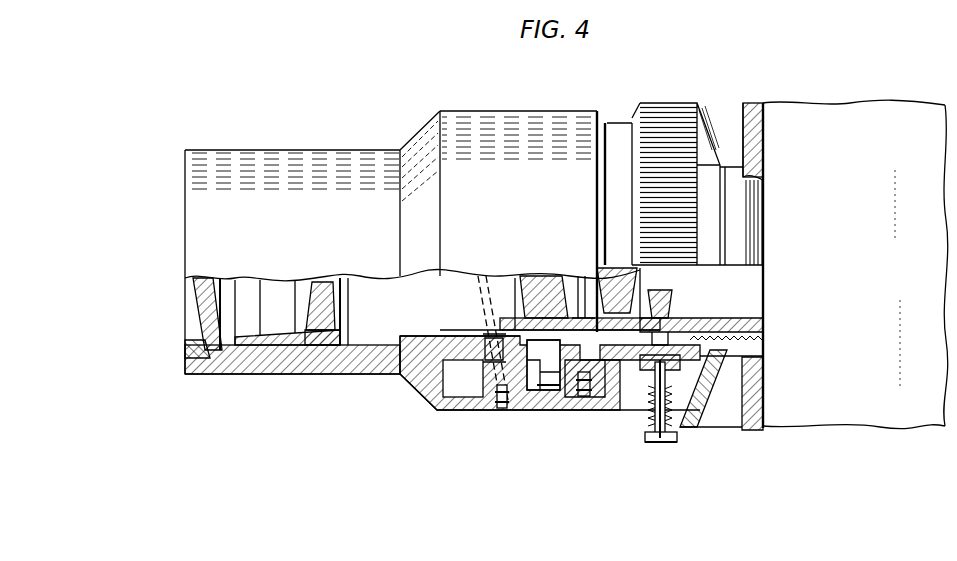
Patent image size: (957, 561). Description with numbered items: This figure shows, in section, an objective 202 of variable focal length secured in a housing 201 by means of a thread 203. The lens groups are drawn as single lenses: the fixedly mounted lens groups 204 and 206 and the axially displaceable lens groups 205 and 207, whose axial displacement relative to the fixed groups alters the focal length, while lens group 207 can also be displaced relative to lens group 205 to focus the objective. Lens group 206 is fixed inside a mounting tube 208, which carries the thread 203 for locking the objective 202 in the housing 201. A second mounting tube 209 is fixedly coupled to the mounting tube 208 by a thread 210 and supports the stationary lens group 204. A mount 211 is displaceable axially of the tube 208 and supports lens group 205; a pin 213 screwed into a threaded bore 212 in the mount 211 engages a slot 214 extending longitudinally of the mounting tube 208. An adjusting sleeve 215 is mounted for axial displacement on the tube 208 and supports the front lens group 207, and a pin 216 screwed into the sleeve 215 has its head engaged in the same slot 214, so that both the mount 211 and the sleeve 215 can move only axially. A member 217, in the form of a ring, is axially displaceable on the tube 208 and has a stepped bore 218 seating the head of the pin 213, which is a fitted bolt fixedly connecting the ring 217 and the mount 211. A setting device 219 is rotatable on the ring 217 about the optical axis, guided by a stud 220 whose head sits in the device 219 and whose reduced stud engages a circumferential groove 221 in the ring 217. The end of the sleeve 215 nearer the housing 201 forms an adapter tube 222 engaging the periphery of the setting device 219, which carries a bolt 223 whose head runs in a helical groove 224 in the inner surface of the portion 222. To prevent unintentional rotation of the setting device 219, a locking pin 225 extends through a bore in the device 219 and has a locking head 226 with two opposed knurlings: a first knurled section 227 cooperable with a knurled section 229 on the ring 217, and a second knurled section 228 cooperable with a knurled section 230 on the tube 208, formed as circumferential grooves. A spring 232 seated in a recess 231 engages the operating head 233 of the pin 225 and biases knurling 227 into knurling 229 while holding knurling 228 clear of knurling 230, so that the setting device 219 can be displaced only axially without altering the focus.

The housing 201 is at (858, 112).
The objective 202 is at (520, 122).
The thread 203 is at (758, 182).
The lens group 204 is at (612, 268).
The lens group 205 is at (580, 278).
The lens group 206 is at (325, 280).
The lens group 207 is at (193, 290).
The mounting tube 208 is at (320, 342).
The mounting tube 209 is at (716, 318).
The thread 210 is at (765, 312).
The mount 211 is at (650, 316).
The threaded bore 212 is at (525, 282).
The pin 213 is at (542, 388).
The slot 214 is at (380, 352).
The adjusting sleeve 215 is at (258, 362).
The pin 216 is at (486, 340).
The member 217 is at (596, 386).
The stepped bore 218 is at (530, 390).
The setting device 219 is at (663, 117).
The stud 220 is at (584, 398).
The circumferential groove 221 is at (630, 346).
The adapter tube 222 is at (447, 412).
The bolt 223 is at (500, 408).
The helical groove 224 is at (472, 290).
The locking pin 225 is at (668, 444).
The locking head 226 is at (700, 412).
The first knurled section 227 is at (650, 410).
The second knurled section 228 is at (721, 390).
The knurled section 229 is at (660, 332).
The knurled section 230 is at (766, 356).
The recess 231 is at (694, 420).
The spring 232 is at (654, 442).
The operating head 233 is at (656, 446).